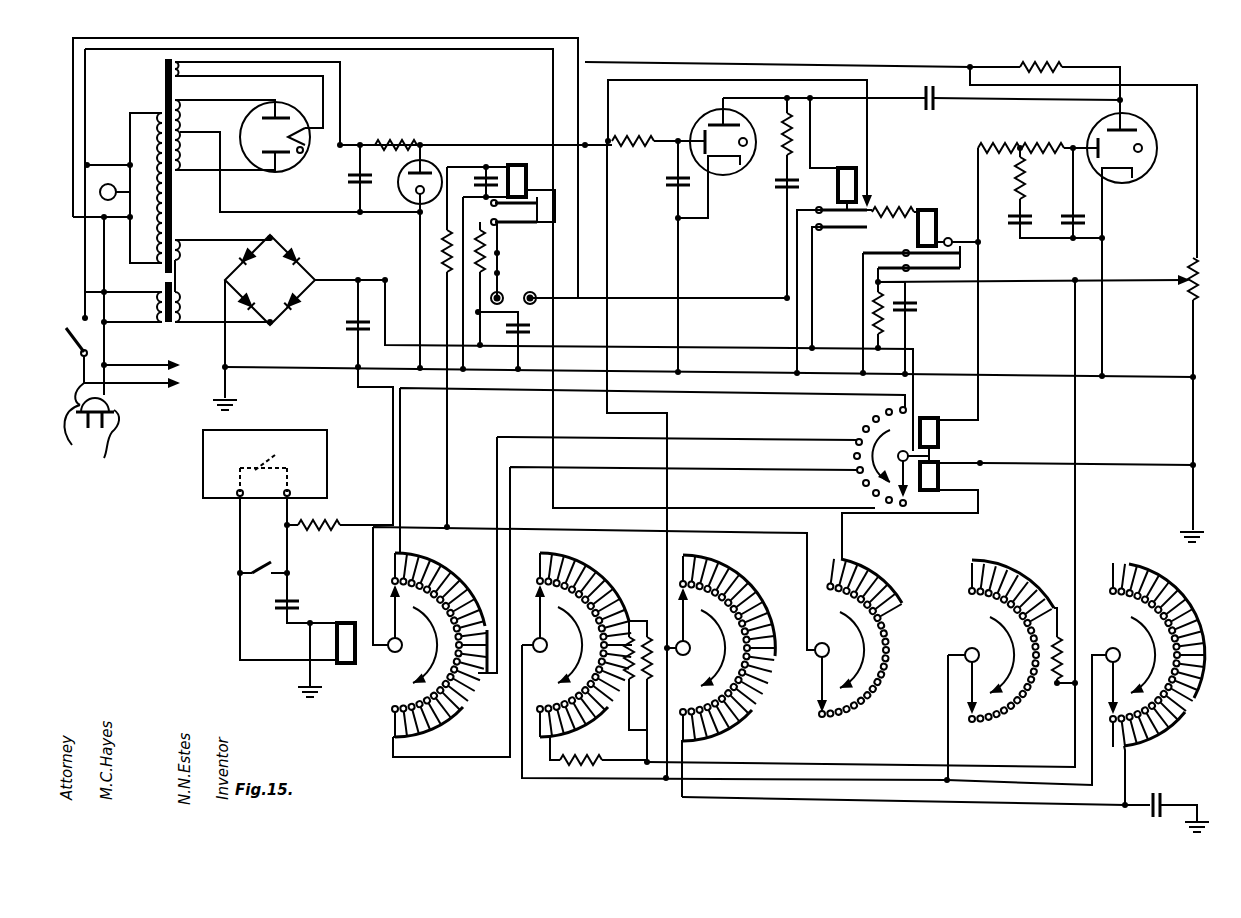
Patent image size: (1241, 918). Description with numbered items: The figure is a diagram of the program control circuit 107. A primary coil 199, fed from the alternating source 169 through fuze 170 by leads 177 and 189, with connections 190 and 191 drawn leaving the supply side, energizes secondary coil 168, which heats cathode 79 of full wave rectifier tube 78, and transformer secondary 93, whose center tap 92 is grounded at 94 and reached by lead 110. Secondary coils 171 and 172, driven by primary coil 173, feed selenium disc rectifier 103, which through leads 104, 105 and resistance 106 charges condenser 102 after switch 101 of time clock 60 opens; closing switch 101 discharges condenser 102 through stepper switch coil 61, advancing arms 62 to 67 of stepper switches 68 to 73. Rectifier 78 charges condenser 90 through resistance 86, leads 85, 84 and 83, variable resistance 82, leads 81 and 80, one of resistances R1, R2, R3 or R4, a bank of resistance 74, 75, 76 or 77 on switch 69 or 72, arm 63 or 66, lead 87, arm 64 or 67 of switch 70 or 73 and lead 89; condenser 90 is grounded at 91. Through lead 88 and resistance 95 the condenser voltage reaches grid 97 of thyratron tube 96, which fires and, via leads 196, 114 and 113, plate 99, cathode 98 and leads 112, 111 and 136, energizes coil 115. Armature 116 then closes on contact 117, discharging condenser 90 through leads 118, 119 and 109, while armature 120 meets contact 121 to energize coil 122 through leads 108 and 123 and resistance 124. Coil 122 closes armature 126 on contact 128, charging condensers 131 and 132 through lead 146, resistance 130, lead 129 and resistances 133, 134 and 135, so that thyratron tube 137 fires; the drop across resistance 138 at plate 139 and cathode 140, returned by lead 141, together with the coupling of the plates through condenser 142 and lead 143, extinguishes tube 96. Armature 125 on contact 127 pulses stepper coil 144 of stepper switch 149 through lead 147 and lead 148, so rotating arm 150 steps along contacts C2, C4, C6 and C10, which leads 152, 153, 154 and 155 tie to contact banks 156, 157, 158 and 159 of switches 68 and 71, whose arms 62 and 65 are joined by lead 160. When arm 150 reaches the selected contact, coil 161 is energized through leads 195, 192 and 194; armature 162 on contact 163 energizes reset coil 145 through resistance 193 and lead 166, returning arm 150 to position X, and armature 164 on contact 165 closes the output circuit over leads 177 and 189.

The lead 177 is at (108, 44).
The lead 189 is at (86, 93).
The primary coil 199 is at (146, 168).
The secondary coil 168 is at (183, 67).
The center tap 92 is at (184, 132).
The transformer secondary 93 is at (181, 147).
The full wave rectifier tube 78 is at (274, 147).
The cathode 79 is at (302, 151).
The lead 110 is at (298, 212).
The secondary coil 171 is at (180, 250).
The secondary coil 172 is at (180, 308).
The primary coil 173 is at (158, 308).
The selenium disc rectifier 103 is at (283, 287).
The lead 104 is at (385, 280).
The lead 111 is at (372, 370).
The ground 94 is at (231, 403).
The switch / output line 190 is at (154, 364).
The output line 191 is at (164, 386).
The alternating source of energy 169 is at (116, 414).
The fuze 170 is at (89, 420).
The lead 85 is at (412, 146).
The resistance 86 is at (375, 145).
The lead 136 is at (420, 240).
The armature 162 is at (424, 215).
The coil 161 is at (516, 166).
The contact 163 is at (542, 190).
The resistance 193 is at (456, 260).
The lead 195 is at (460, 344).
The armature 164 is at (532, 238).
The contact 165 is at (553, 242).
The lead 192 is at (448, 403).
The lead 105 is at (356, 437).
The resistance 106 is at (340, 532).
The time clock 60 is at (252, 430).
The switch 101 is at (288, 578).
The condenser 102 is at (301, 604).
The stepper switch coil 61 is at (350, 664).
The resistance 95 is at (630, 138).
The grid 97 is at (704, 124).
The plate 99 is at (743, 126).
The cathode 98 is at (728, 180).
The thyratron tube 96 is at (730, 170).
The lead 112 is at (678, 257).
The lead 113 is at (751, 98).
The lead 114 is at (810, 130).
The lead 196 is at (764, 298).
The coil 115 is at (848, 168).
The lead 118 is at (861, 76).
The lead 84 is at (818, 65).
The armature 116 is at (821, 208).
The contact 117 is at (872, 208).
The armature 120 is at (852, 231).
The contact 121 is at (866, 227).
The resistance 124 is at (895, 208).
The coil 122 is at (935, 208).
The contact 127 is at (946, 238).
The armature 125 is at (930, 286).
The armature 126 is at (924, 294).
The contact 128 is at (966, 260).
The lead 129 is at (886, 252).
The lead 123 is at (850, 270).
The resistance 130 is at (891, 310).
The lead 119 is at (800, 332).
The lead 146 is at (877, 338).
The lead 194 is at (920, 355).
The lead 108 is at (657, 336).
The condenser 142 is at (927, 100).
The lead 143 is at (1002, 102).
The resistance 133 is at (1000, 146).
The resistance 135 is at (1066, 146).
The resistance 134 is at (1018, 184).
The condenser 131 is at (1016, 206).
The condenser 132 is at (1070, 216).
The resistance 138 is at (1054, 68).
The thyratron tube 137 is at (1150, 136).
The plate 139 is at (1125, 128).
The cathode 140 is at (1116, 179).
The lead 83 is at (1197, 150).
The lead 141 is at (1102, 346).
The lead 147 is at (978, 346).
The lead 81 is at (1136, 278).
The variable resistance 82 is at (1193, 282).
The lead 109 is at (1192, 436).
The lead 80 is at (1076, 524).
The lead 148 is at (1025, 462).
The stepper switch 149 is at (908, 456).
The contact C10 is at (890, 408).
The contact C6 is at (858, 440).
The contact C4 is at (858, 468).
The contact C2 is at (870, 493).
The reset position X is at (898, 505).
The conductor 155 is at (802, 394).
The conductor 154 is at (774, 442).
The conductor 153 is at (747, 470).
The lead 166 is at (730, 498).
The lead 160 is at (745, 534).
The program control circuit 107 is at (470, 787).
The stepper coil 144 is at (934, 422).
The reset coil 145 is at (968, 442).
The rotating arm 150 is at (926, 494).
The conductor 152 is at (842, 532).
The contact bank 159 is at (437, 564).
The contact bank 158 is at (486, 676).
The contact bank 157 is at (432, 735).
The stepper switch 68 is at (406, 647).
The arm 62 is at (413, 636).
The bank of resistance 74 is at (590, 570).
The bank of resistance 76 is at (578, 733).
The stepper switch 69 is at (814, 711).
The arm 63 is at (558, 636).
The resistance R1 is at (654, 682).
The resistance R2 is at (632, 691).
The resistance R3 is at (585, 762).
The bank of resistance 75 is at (667, 662).
The lead 88 is at (686, 542).
The stepper switch 70 is at (689, 649).
The arm 64 is at (701, 639).
The contact bank 156 is at (882, 572).
The stepper switch 71 is at (836, 649).
The arm 65 is at (824, 670).
The bank of resistance 77 is at (1012, 574).
The resistance R4 is at (1063, 640).
The stepper switch 72 is at (976, 713).
The arm 66 is at (971, 674).
The stepper switch 73 is at (1155, 684).
The arm 67 is at (1111, 674).
The lead 87 is at (604, 798).
The lead 89 is at (1014, 812).
The condenser 90 is at (1170, 791).
The ground 91 is at (1172, 822).